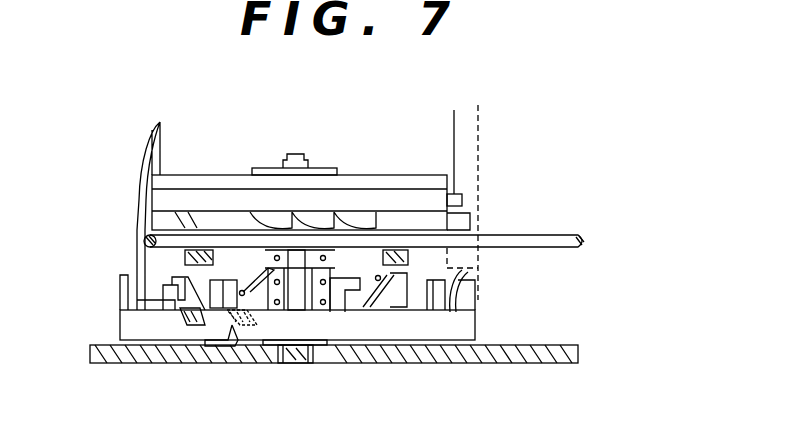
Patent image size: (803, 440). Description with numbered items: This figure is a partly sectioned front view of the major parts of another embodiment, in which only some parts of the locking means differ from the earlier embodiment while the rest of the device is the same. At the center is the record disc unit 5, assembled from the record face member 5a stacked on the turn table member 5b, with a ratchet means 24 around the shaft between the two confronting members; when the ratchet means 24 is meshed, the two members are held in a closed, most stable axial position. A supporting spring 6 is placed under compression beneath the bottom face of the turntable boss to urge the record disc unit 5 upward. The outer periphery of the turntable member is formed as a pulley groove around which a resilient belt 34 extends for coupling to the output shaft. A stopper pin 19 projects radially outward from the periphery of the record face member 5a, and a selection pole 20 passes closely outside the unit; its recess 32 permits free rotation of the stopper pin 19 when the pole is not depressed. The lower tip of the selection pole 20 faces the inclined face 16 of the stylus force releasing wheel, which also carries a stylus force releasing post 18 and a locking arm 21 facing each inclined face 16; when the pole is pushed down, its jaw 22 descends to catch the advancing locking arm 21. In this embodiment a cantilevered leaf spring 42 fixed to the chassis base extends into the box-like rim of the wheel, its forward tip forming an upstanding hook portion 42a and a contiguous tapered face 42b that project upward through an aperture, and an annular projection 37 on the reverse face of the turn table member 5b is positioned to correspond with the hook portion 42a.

The record disc unit 5 is at (150, 200).
The record face member 5a is at (183, 172).
The turn table member 5b is at (175, 250).
The supporting spring 6 is at (314, 310).
The inclined face 16 is at (387, 310).
The stylus force releasing post 18 is at (146, 150).
The stopper pin 19 is at (463, 194).
The selection pole 20 is at (479, 165).
The locking arm 21 is at (212, 280).
The jaw 22 is at (480, 278).
The ratchet means 24 is at (310, 213).
The recess 32 is at (465, 218).
The resilient belt 34 is at (540, 248).
The annular projection 37 is at (165, 262).
The leaf spring 42 is at (233, 347).
The hook portion 42a is at (318, 280).
The tapered face 42b is at (244, 290).